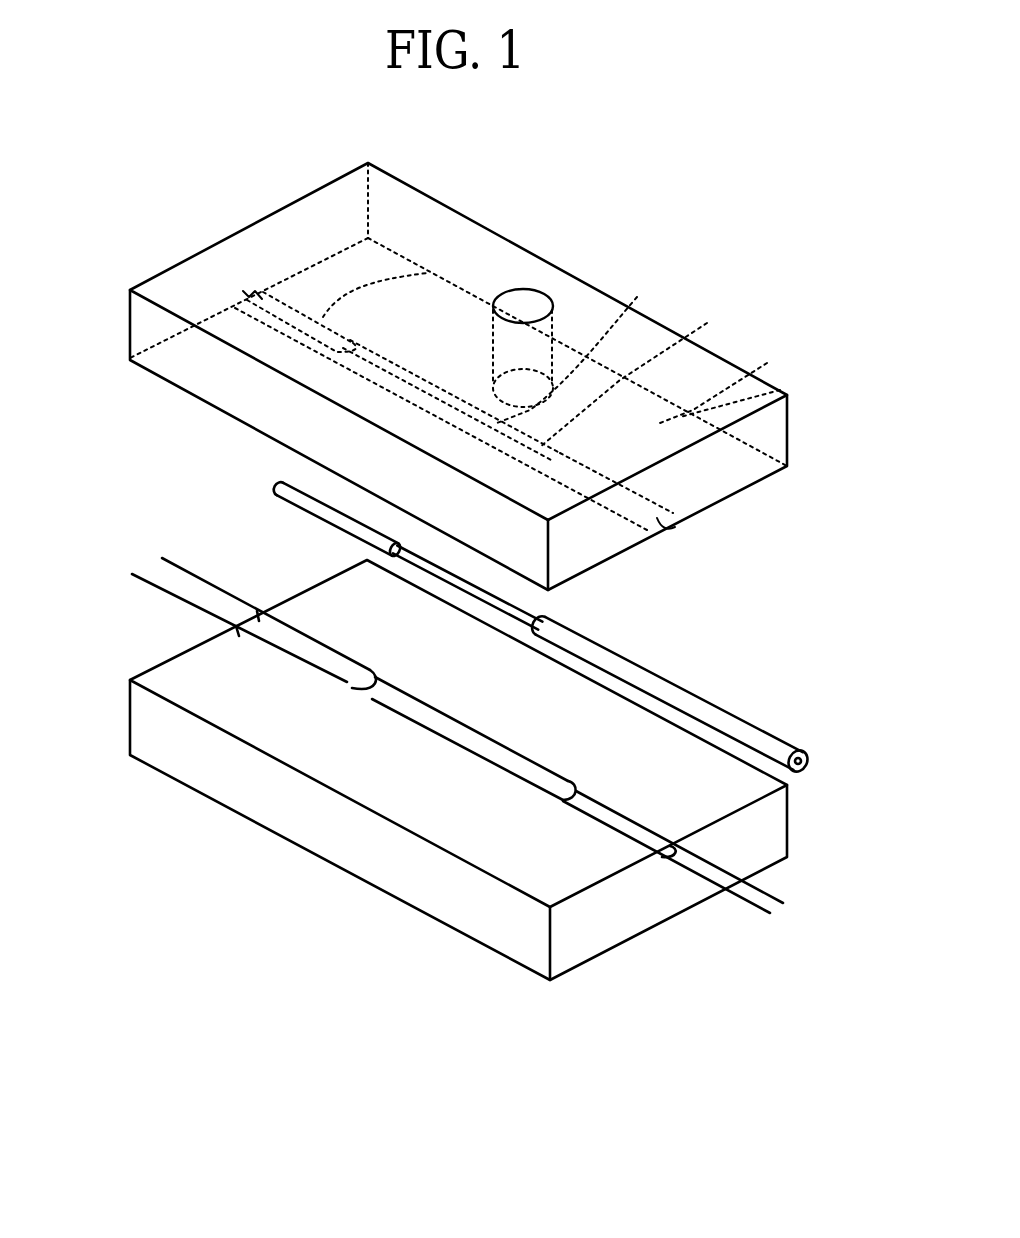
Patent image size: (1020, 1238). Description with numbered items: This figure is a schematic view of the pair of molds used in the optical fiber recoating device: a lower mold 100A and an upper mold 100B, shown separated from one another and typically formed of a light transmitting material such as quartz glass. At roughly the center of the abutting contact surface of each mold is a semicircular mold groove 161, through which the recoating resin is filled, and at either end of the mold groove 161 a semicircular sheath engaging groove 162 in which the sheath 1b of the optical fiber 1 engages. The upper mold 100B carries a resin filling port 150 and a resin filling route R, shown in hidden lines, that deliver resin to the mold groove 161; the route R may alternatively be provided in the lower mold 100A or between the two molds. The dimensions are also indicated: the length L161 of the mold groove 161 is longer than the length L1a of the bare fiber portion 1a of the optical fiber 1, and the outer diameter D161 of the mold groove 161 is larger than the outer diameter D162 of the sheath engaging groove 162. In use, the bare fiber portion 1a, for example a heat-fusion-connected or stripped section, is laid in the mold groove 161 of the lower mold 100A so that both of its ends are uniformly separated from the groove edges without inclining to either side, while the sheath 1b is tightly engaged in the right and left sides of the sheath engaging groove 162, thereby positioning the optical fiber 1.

The optical fiber 1 is at (570, 628).
The bare fiber portion 1a is at (488, 590).
The sheath 1b is at (687, 688).
The lower mold 100A is at (652, 927).
The upper mold 100B is at (250, 224).
The resin filling port 150 is at (528, 292).
The mold groove 161 is at (683, 350).
The sheath engaging groove 162 is at (430, 275).
The resin filling route R is at (603, 330).
The outer diameter of the mold groove D161 is at (245, 555).
The outer diameter of the sheath engaging groove D162 is at (700, 922).
The length of the mold groove L161 is at (345, 676).
The length of the bare fiber portion L1a is at (388, 540).